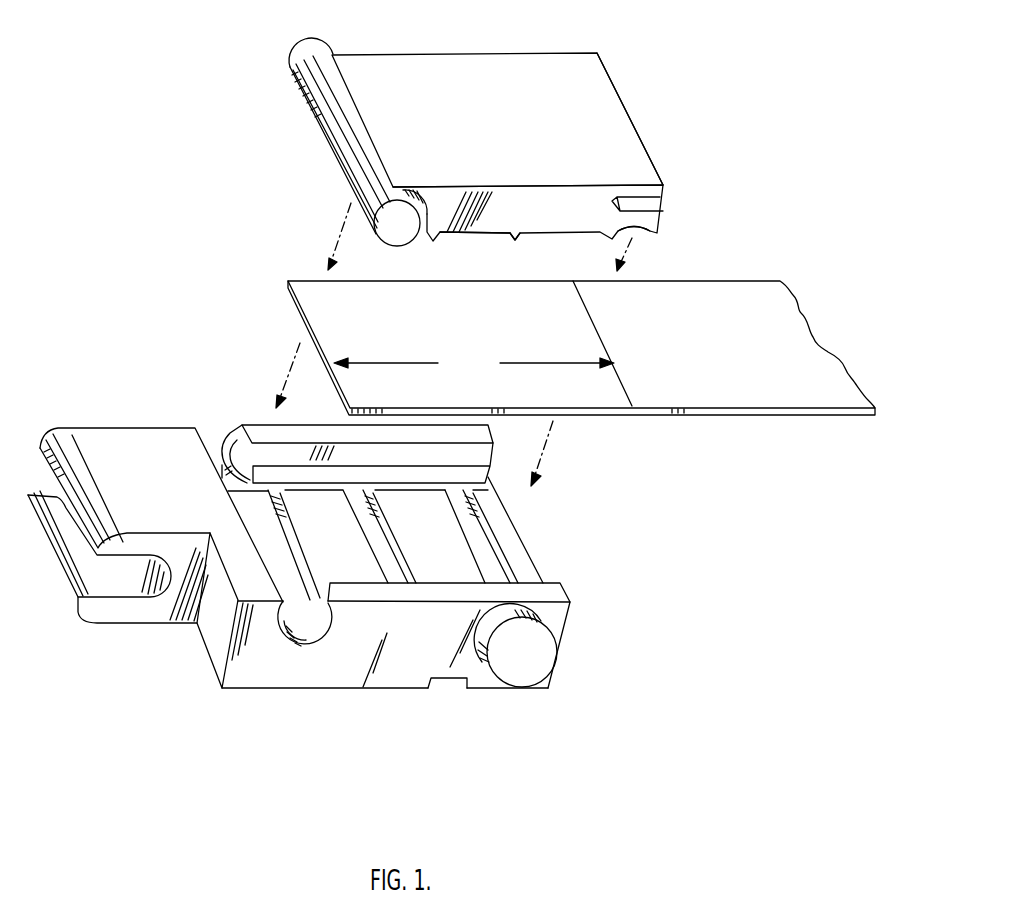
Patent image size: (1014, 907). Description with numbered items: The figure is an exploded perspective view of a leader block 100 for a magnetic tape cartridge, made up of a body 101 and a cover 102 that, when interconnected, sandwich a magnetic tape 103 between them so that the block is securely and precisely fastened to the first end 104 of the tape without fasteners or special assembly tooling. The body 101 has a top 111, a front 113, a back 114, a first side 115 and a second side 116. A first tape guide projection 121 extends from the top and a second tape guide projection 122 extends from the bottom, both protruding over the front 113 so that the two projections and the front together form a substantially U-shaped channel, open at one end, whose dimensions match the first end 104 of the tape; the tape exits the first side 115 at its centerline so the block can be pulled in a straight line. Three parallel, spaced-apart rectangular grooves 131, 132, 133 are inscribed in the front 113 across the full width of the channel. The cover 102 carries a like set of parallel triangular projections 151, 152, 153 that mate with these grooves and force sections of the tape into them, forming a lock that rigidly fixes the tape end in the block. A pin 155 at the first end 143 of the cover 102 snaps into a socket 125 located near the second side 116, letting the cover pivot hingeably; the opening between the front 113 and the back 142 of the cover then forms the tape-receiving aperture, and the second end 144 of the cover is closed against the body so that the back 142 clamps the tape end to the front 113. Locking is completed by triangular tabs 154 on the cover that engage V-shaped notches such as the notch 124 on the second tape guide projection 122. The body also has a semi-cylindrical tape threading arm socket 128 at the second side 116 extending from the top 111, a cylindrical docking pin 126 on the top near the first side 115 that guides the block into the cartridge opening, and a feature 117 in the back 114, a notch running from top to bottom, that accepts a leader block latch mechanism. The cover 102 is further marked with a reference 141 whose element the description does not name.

The leader block 100 is at (104, 52).
The body 101 is at (233, 690).
The cover 102 is at (598, 108).
The magnetic tape 103 is at (790, 308).
The first end 104 is at (474, 361).
The top 111 is at (417, 672).
The front 113 is at (318, 517).
The back 114 is at (243, 690).
The first side 115 is at (563, 640).
The second side 116 is at (217, 640).
The feature 117 is at (447, 679).
The first tape guide projection 121 is at (554, 578).
The second tape guide projection 122 is at (500, 452).
The notch 124 is at (490, 474).
The socket 125 is at (304, 647).
The docking pin 126 is at (519, 677).
The tape threading arm socket 128 is at (83, 572).
The groove 131 is at (268, 517).
The groove 132 is at (382, 553).
The groove 133 is at (486, 560).
The top surface 141 is at (490, 90).
The back 142 is at (472, 250).
The first end 143 is at (318, 160).
The second end 144 is at (646, 133).
The projection 151 is at (390, 198).
The projection 152 is at (507, 242).
The projection 153 is at (654, 229).
The tab 154 is at (656, 208).
The pin 155 is at (280, 96).